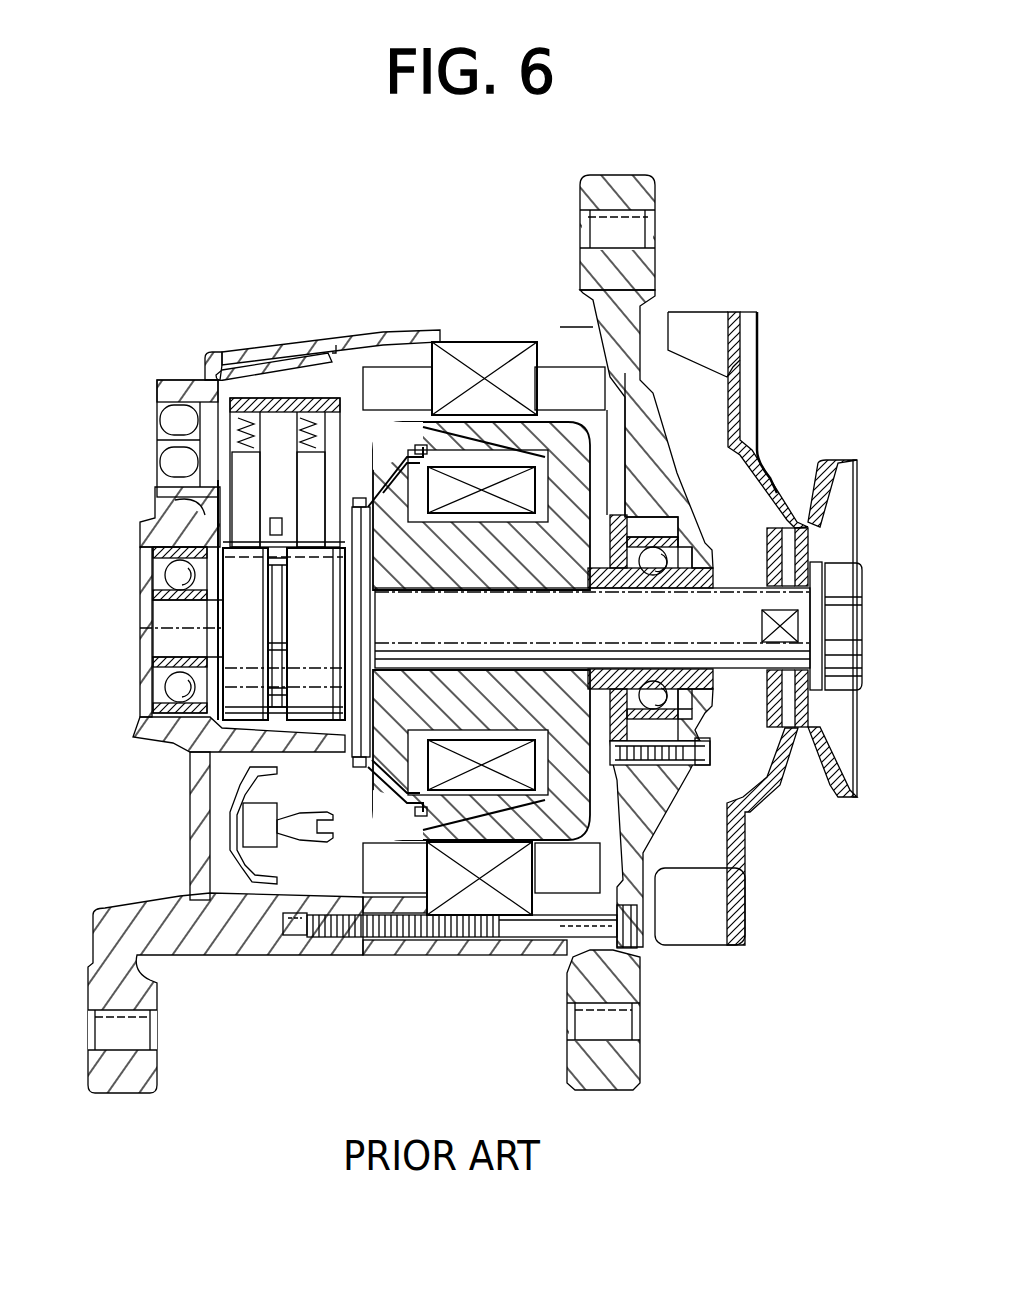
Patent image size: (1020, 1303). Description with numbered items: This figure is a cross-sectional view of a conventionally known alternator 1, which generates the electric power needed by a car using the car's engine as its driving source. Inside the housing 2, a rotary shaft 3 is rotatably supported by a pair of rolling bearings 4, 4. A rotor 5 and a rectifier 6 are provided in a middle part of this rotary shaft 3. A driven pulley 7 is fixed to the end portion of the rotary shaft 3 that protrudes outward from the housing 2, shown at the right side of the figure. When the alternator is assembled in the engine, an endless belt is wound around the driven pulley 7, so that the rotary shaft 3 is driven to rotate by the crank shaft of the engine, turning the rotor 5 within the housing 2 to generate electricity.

The alternator 1 is at (680, 262).
The housing 2 is at (374, 947).
The rotary shaft 3 is at (715, 600).
The rolling bearings 4 is at (172, 546).
The rotor 5 is at (395, 815).
The rectifier 6 is at (233, 603).
The driven pulley 7 is at (812, 513).